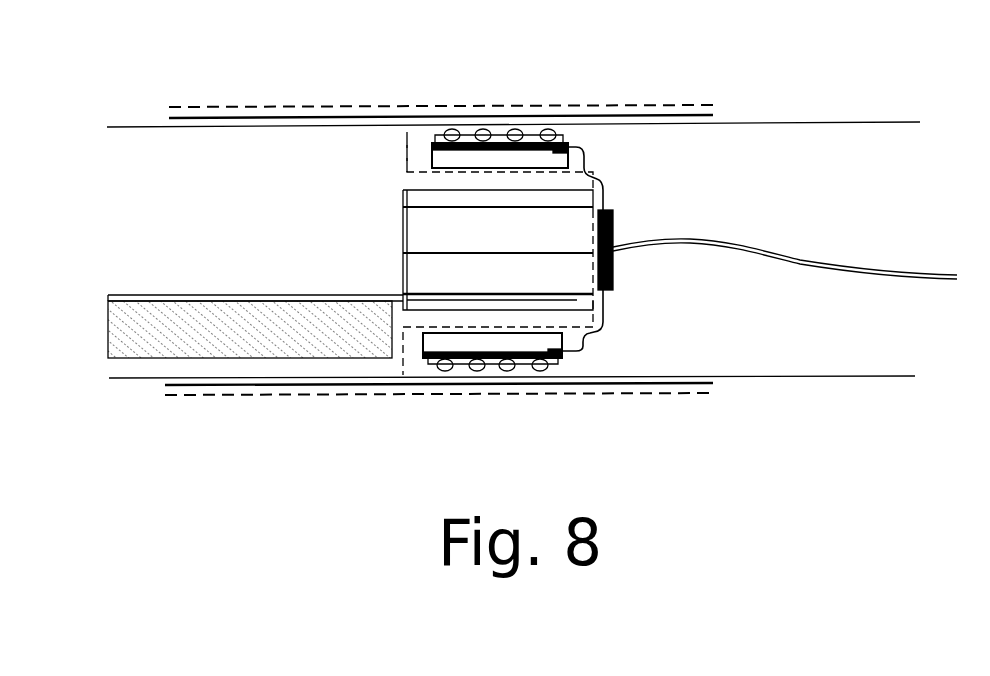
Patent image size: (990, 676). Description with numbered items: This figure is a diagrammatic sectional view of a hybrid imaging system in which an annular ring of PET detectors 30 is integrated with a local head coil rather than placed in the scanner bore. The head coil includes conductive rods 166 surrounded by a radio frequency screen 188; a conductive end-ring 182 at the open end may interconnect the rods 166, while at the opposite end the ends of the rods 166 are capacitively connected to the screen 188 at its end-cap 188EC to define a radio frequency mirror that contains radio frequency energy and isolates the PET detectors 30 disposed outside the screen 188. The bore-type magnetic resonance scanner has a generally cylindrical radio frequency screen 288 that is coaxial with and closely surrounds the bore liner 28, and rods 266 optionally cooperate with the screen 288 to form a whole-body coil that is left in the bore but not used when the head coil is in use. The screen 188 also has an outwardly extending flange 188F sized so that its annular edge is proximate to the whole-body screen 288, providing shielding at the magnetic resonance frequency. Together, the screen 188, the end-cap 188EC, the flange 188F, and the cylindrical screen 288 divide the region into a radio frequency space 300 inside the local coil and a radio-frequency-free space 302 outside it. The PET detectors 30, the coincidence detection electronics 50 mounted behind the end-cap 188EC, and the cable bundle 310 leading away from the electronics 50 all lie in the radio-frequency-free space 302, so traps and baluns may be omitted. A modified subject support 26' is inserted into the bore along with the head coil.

The modified subject support 26' is at (255, 293).
The bore liner 28 is at (845, 123).
The annular ring of PET detectors 30 is at (494, 152).
The coincidence detection electronics 50 is at (612, 273).
The conductive rods 166 is at (450, 292).
The conductive end-ring 182 is at (405, 274).
The radio frequency screen 188 is at (468, 173).
The outwardly extending flange 188F is at (402, 153).
The end-cap 188EC is at (603, 197).
The rods 266 is at (225, 117).
The generally cylindrical radio frequency screen 288 is at (341, 106).
The radio frequency space 300 is at (255, 208).
The radio-frequency-free space 302 is at (870, 243).
The cable bundle 310 is at (923, 273).